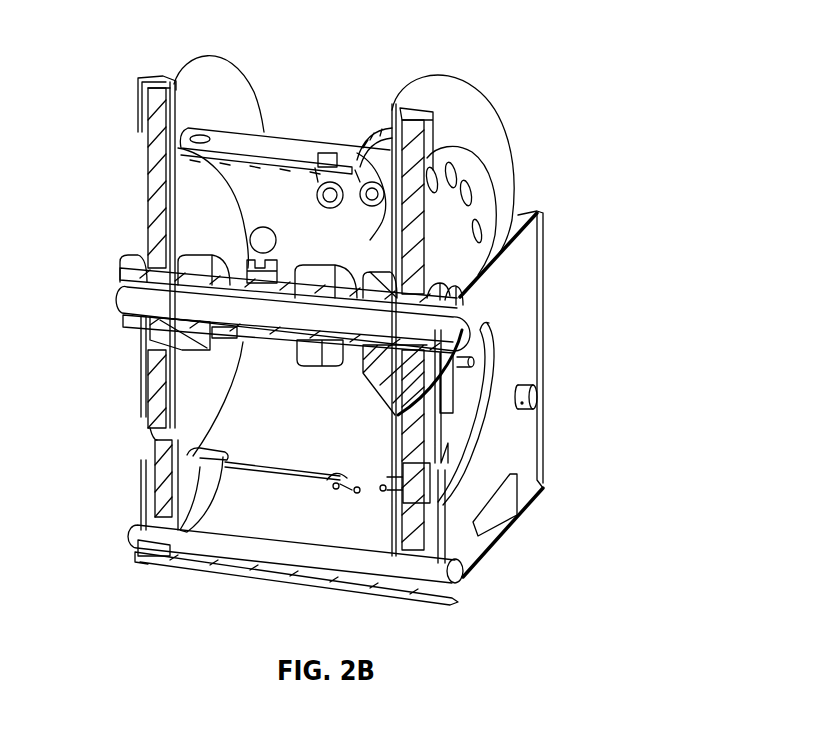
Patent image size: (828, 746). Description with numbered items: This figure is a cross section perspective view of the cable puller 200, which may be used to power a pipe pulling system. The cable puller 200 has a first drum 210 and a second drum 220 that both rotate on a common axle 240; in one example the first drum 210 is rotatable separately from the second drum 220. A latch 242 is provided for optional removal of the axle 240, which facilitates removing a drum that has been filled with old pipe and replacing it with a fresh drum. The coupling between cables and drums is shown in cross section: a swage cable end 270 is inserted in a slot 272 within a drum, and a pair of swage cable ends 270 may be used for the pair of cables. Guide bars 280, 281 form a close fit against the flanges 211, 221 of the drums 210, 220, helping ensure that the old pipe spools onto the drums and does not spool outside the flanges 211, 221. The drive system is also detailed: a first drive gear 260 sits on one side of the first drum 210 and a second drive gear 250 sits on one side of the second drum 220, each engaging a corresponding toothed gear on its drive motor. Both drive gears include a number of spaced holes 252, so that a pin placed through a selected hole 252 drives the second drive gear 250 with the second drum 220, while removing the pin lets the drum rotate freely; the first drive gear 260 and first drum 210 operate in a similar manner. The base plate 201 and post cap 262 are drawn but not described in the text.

The cable puller 200 is at (594, 378).
The base plate 201 is at (521, 455).
The first drum 210 is at (190, 187).
The flange 211 is at (200, 471).
The second drum 220 is at (428, 114).
The flange 221 is at (420, 498).
The common axle 240 is at (452, 340).
The latch 242 is at (458, 300).
The second drive gear 250 is at (430, 202).
The spaced holes 252 is at (467, 193).
The first drive gear 260 is at (157, 220).
The post cap 262 is at (158, 132).
The swage cable end 270 is at (322, 156).
The slot 272 is at (330, 168).
The guide bar 280 is at (468, 574).
The guide bar 281 is at (536, 398).